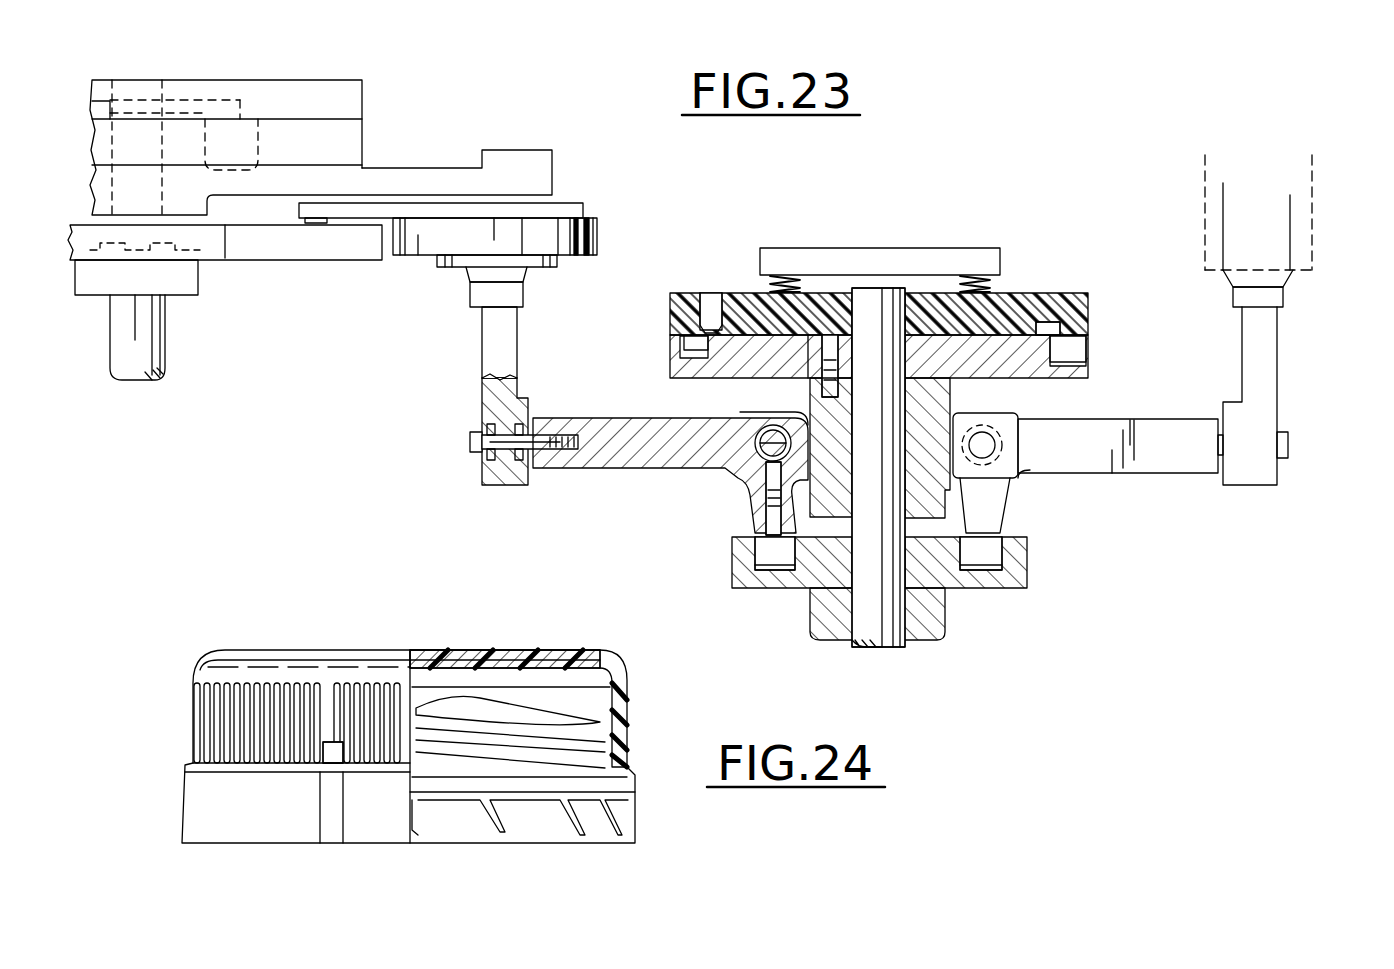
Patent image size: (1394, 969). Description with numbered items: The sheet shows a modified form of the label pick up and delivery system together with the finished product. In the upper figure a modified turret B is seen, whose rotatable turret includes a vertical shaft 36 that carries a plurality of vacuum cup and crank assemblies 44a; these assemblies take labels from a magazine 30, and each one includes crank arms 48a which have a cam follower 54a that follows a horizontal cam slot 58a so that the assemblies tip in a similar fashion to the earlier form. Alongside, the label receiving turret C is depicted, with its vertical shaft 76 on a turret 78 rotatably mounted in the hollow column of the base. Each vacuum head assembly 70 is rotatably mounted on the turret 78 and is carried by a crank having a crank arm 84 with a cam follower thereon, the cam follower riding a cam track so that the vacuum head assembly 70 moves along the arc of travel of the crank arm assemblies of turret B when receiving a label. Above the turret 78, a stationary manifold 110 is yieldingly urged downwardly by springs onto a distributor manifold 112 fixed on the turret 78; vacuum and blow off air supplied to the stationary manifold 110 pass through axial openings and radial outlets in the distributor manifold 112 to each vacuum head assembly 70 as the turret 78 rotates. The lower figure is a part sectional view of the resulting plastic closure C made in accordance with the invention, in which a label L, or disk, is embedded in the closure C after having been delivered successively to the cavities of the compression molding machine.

In FIG. 23, the stationary manifold 110 is at (352, 82).
In FIG. 23, the distributor manifold 112 is at (345, 128).
In FIG. 23, the turret 78 is at (390, 178).
In FIG. 23, the crank arm 84 is at (562, 208).
In FIG. 23, the vacuum head assembly 70 is at (598, 232).
In FIG. 23, the vertical shaft 76 is at (152, 337).
In FIG. 23, the vacuum cup and crank assembly 44a is at (496, 340).
In FIG. 23, the crank arm 48a is at (672, 460).
In FIG. 23, the cam follower 54a is at (765, 552).
In FIG. 23, the horizontal cam slot 58a is at (1005, 553).
In FIG. 23, the vertical shaft 36 is at (908, 650).
In FIG. 23, the magazine 30 is at (1313, 183).
In FIG. 24, the label L is at (490, 650).
In FIG. 24, the closure C is at (625, 722).